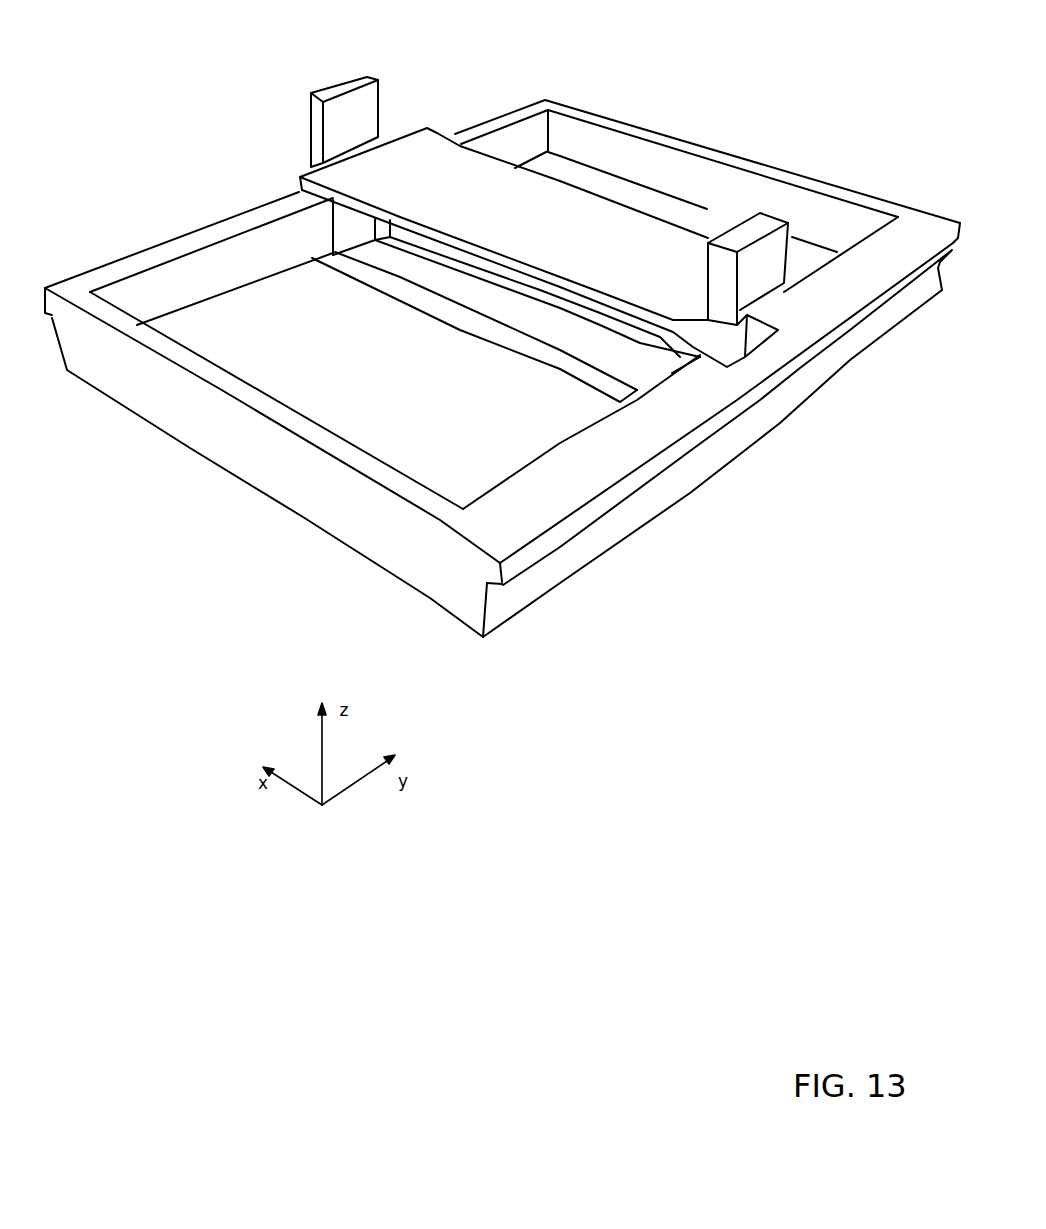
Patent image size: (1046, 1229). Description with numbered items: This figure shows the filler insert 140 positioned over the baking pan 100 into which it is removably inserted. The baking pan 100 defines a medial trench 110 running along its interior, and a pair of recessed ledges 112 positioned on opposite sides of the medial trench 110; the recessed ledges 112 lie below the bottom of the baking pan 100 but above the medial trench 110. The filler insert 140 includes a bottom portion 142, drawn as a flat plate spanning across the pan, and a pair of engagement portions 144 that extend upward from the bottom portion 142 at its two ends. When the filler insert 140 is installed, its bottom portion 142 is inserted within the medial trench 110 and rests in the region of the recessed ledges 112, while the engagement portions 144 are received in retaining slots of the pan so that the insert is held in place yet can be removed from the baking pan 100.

The baking pan 100 is at (651, 110).
The filler insert 140 is at (514, 196).
The bottom portion 142 is at (504, 225).
The engagement portions 144 is at (373, 107).
The medial trench 110 is at (446, 285).
The recessed ledges 112 is at (484, 333).